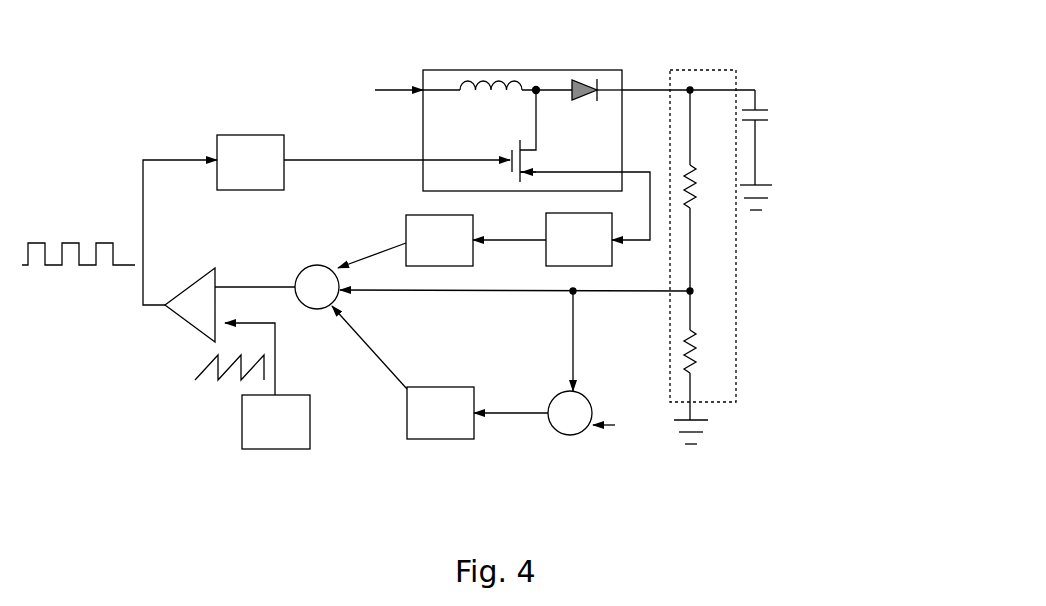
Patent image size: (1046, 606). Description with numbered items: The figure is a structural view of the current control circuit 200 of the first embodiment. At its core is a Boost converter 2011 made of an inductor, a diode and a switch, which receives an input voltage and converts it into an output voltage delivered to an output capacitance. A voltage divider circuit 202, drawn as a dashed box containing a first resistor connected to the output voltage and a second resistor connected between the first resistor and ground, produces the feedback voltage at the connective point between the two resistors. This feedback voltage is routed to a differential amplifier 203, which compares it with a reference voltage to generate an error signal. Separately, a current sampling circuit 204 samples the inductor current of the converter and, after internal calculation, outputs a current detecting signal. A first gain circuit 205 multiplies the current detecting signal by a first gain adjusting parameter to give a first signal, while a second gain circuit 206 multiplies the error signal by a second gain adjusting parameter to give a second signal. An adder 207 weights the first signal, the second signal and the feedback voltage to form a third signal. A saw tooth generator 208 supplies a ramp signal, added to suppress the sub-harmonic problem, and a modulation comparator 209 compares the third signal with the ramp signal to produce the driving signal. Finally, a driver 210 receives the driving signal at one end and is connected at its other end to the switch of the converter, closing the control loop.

The current control circuit 200 is at (63, 31).
The Boost converter 2011 is at (493, 70).
The voltage divider circuit 202 is at (700, 70).
The differential amplifier 203 is at (565, 436).
The current sampling circuit 204 is at (597, 250).
The first gain circuit 205 is at (412, 214).
The second gain circuit 206 is at (440, 440).
The adder 207 is at (306, 266).
The saw tooth generator 208 is at (294, 433).
The modulation comparator 209 is at (178, 276).
The driver 210 is at (268, 173).